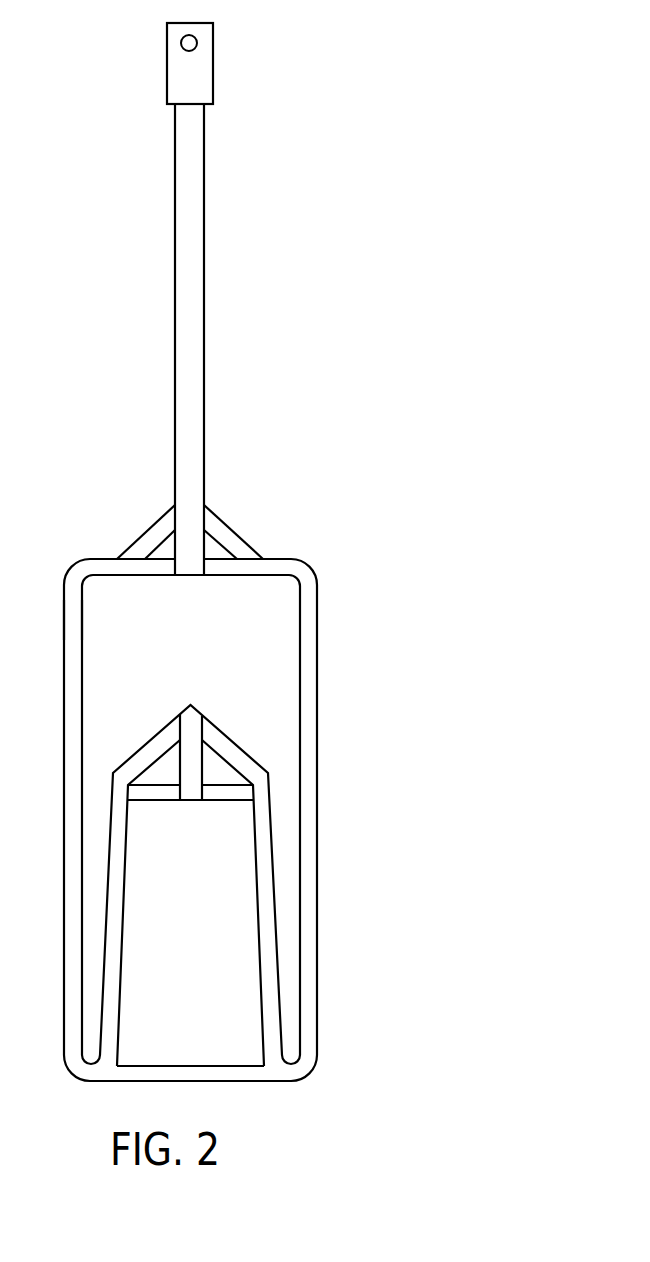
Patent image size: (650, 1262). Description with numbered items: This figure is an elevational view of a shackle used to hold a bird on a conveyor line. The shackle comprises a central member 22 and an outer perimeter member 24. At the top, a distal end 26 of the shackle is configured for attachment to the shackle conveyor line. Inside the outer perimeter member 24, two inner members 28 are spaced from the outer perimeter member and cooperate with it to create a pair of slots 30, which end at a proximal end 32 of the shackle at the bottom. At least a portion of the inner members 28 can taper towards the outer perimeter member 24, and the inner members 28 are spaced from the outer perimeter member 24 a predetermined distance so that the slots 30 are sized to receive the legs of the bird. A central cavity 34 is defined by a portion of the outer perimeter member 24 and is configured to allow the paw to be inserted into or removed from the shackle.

The central member 22 is at (188, 248).
The outer perimeter member 24 is at (73, 722).
The distal end 26 is at (198, 68).
The inner members 28 is at (117, 862).
The slots 30 is at (93, 930).
The proximal end 32 is at (297, 1080).
The central cavity 34 is at (96, 628).